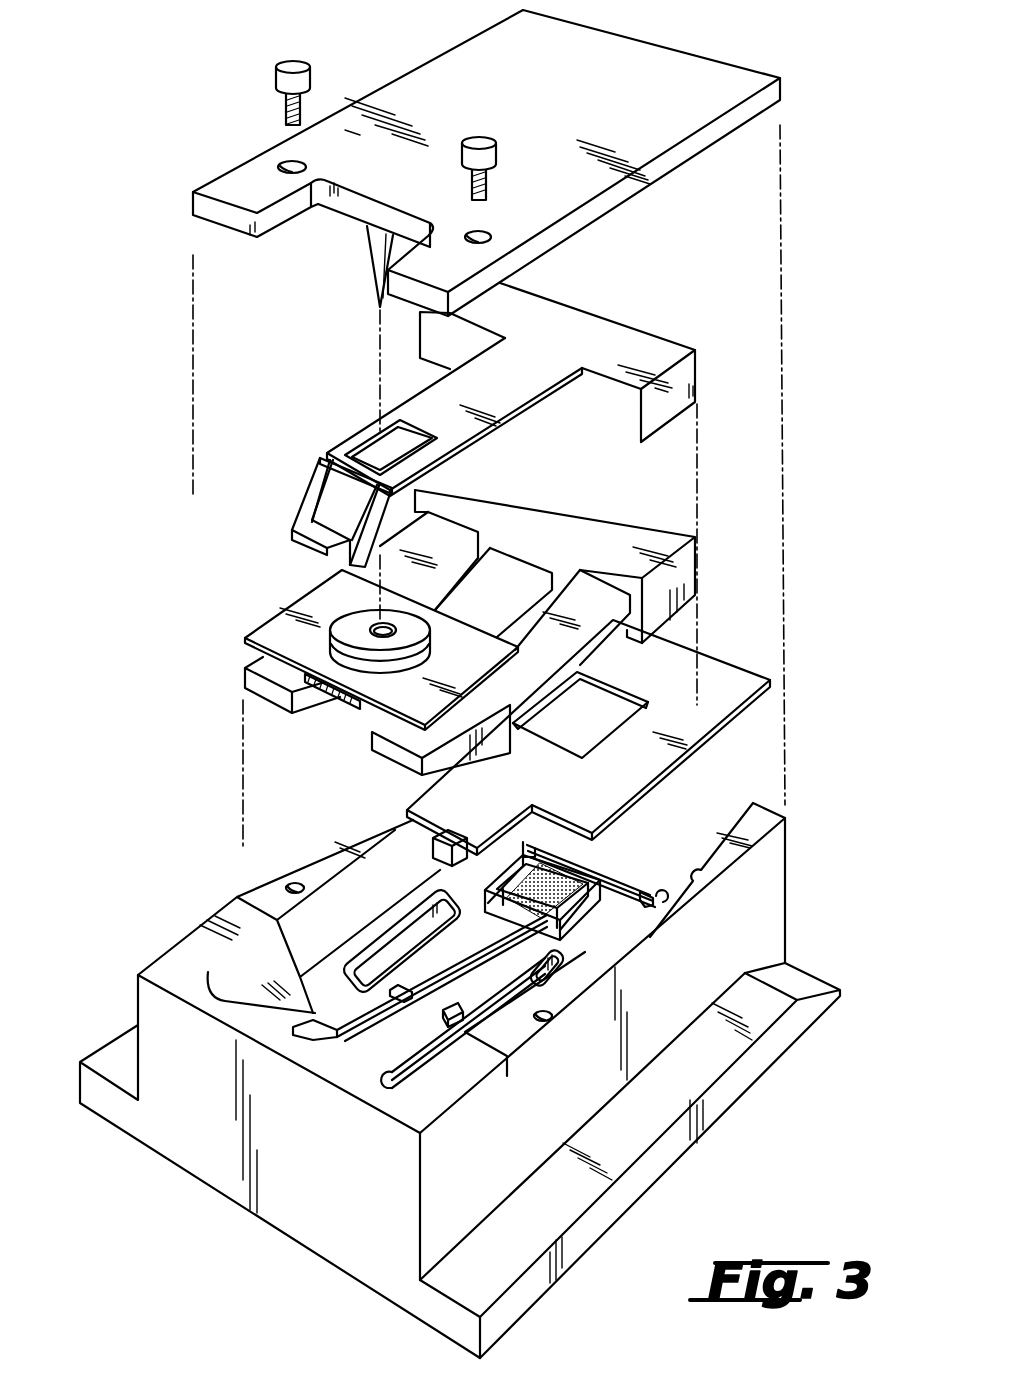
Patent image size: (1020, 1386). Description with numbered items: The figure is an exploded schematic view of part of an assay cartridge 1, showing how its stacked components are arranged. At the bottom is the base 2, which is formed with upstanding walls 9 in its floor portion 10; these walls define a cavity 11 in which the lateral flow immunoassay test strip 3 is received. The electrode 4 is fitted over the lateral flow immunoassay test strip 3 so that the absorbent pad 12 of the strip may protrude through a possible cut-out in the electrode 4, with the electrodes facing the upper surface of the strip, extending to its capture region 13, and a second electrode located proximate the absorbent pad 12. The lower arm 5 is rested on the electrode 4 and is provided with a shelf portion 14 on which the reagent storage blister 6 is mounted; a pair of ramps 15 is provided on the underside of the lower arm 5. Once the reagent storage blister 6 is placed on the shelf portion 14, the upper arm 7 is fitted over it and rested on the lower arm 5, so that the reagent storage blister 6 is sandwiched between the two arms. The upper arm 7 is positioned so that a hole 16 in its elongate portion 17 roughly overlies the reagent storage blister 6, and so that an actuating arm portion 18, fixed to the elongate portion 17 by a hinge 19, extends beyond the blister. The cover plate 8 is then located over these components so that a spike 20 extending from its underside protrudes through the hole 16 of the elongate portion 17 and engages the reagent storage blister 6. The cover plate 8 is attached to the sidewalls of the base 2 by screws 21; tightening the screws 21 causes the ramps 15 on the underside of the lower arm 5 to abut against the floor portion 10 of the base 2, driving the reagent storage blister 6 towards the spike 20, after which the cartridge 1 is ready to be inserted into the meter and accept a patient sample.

The cartridge 1 is at (148, 420).
The base 2 is at (713, 1065).
The lateral flow immunoassay test strip 3 is at (397, 1024).
The electrode 4 is at (738, 677).
The lower arm 5 is at (685, 572).
The reagent storage blister 6 is at (282, 632).
The upper arm 7 is at (683, 386).
The cover plate 8 is at (688, 110).
The upstanding walls 9 is at (490, 885).
The floor portion 10 is at (382, 1084).
The cavity 11 is at (436, 966).
The absorbent pad 12 is at (588, 862).
The capture region 13 is at (440, 1000).
The shelf portion 14 is at (263, 666).
The ramps 15 is at (490, 742).
The hole 16 is at (387, 453).
The elongate portion 17 is at (518, 393).
The actuating arm portion 18 is at (313, 488).
The hinge 19 is at (330, 457).
The spike 20 is at (380, 243).
The screws 21 is at (276, 76).